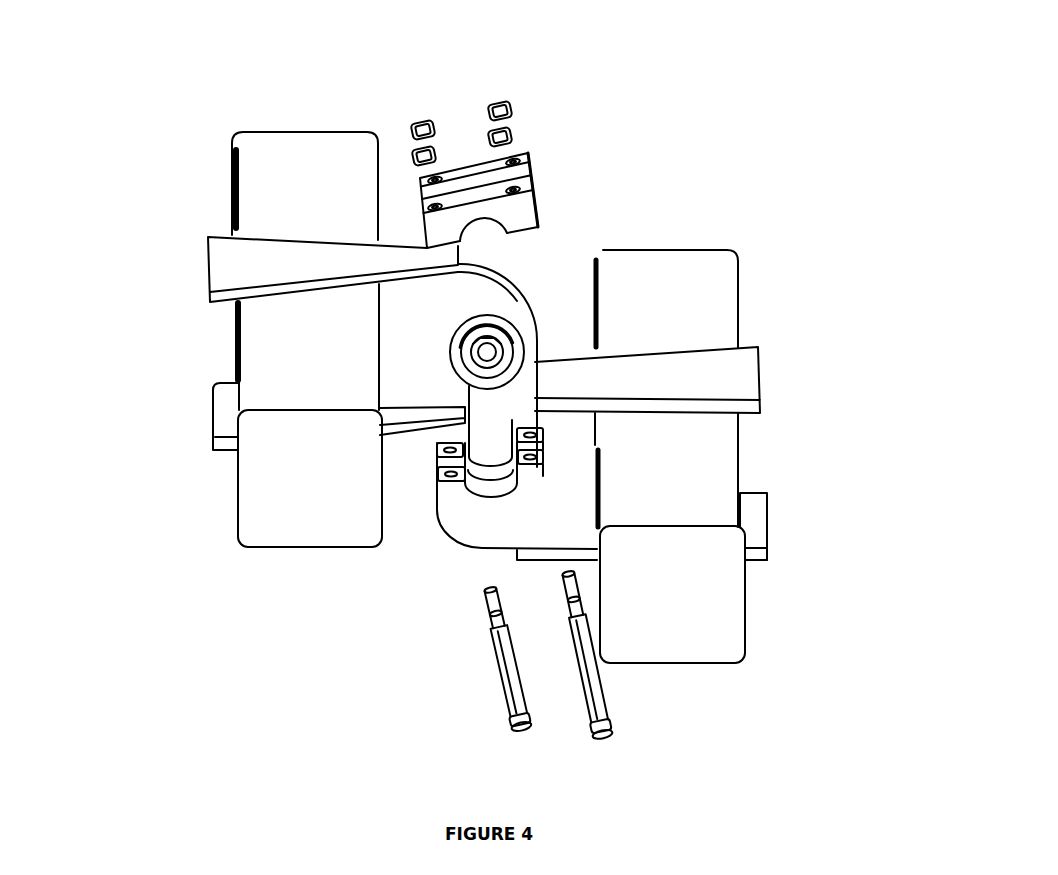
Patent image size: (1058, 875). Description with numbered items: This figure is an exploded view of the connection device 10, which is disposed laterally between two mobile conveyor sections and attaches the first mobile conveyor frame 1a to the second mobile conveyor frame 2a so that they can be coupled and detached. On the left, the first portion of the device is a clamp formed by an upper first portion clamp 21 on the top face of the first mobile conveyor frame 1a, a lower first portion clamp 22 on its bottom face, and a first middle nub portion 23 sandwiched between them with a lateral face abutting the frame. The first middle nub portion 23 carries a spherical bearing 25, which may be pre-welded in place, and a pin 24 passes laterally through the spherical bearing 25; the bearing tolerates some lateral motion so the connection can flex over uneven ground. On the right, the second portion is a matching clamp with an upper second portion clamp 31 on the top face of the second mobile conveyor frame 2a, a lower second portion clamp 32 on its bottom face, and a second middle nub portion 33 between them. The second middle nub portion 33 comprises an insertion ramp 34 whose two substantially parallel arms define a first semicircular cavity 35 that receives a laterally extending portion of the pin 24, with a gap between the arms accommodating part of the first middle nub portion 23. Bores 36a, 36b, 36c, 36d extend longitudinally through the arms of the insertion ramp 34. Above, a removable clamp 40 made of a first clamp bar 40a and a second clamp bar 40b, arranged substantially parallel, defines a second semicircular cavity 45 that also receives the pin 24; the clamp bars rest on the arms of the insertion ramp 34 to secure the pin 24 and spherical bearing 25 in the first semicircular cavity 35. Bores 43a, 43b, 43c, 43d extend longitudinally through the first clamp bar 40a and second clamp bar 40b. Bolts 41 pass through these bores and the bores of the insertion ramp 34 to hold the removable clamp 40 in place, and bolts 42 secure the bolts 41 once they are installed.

The connection device 10 is at (643, 187).
The first mobile conveyor frame 1a is at (262, 323).
The second mobile conveyor frame 2a is at (723, 458).
The upper first portion clamp 21 is at (233, 252).
The lower first portion clamp 22 is at (222, 425).
The first middle nub portion 23 is at (417, 358).
The pin 24 is at (488, 367).
The spherical bearing 25 is at (488, 320).
The upper second portion clamp 31 is at (723, 357).
The lower second portion clamp 32 is at (752, 540).
The second middle nub portion 33 is at (532, 503).
The insertion ramp 34 is at (440, 538).
The first semicircular cavity 35 is at (488, 453).
The bore 36a is at (438, 478).
The bore 36b is at (443, 453).
The bore 36c is at (543, 463).
The bore 36d is at (535, 467).
The removable clamp 40 is at (473, 153).
The first clamp bar 40a is at (597, 155).
The second clamp bar 40b is at (497, 167).
The bolts 41 is at (503, 675).
The bolts 42 is at (425, 118).
The bore 43a is at (422, 208).
The bore 43b is at (430, 170).
The bore 43c is at (497, 167).
The bore 43d is at (505, 218).
The second semicircular cavity 45 is at (482, 236).